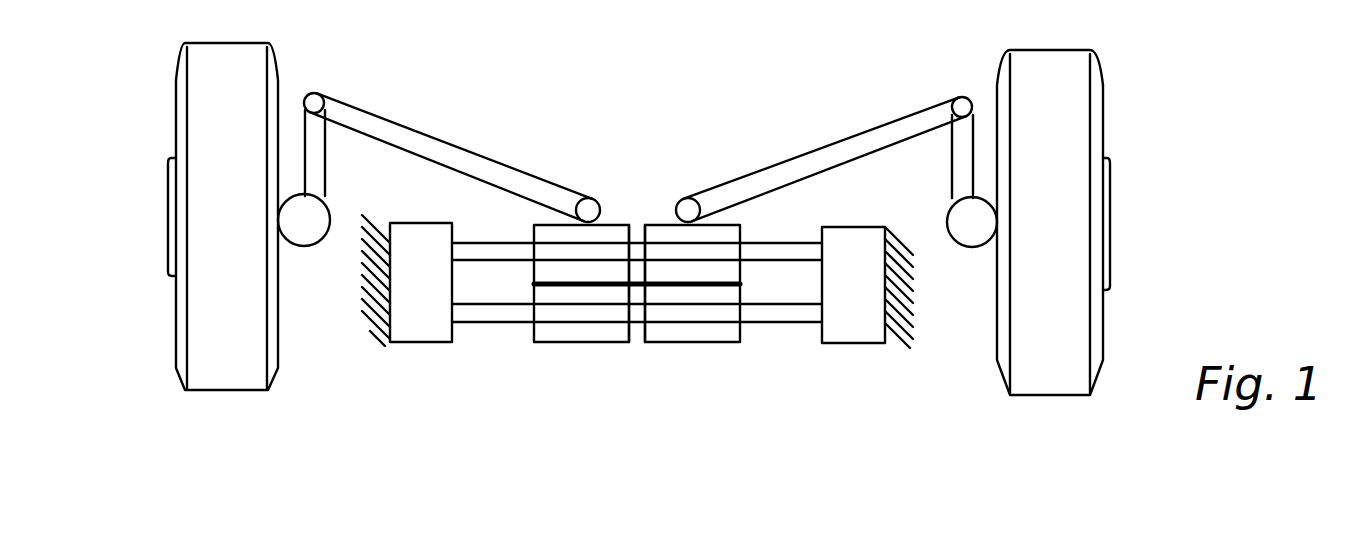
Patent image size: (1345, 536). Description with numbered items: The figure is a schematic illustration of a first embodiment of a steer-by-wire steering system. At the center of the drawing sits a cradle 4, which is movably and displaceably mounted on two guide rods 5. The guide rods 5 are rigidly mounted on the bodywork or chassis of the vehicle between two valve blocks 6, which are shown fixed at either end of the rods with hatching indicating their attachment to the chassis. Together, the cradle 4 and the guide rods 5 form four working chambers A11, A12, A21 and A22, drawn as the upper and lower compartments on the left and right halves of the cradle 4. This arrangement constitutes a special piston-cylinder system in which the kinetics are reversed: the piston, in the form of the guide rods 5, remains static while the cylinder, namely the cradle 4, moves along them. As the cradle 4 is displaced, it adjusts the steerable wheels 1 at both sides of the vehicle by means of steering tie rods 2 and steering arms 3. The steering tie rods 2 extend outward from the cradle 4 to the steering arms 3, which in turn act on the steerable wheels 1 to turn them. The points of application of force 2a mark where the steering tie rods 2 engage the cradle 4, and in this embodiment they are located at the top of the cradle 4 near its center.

The steerable wheels 1 is at (202, 133).
The steering tie rods 2 is at (456, 153).
The points of application of force 2a is at (686, 205).
The steering arms 3 is at (312, 147).
The cradle 4 is at (643, 236).
The guide rods 5 is at (492, 320).
The valve blocks 6 is at (420, 335).
The working chamber A11 is at (563, 233).
The working chamber A12 is at (710, 233).
The working chamber A21 is at (570, 338).
The working chamber A22 is at (688, 335).